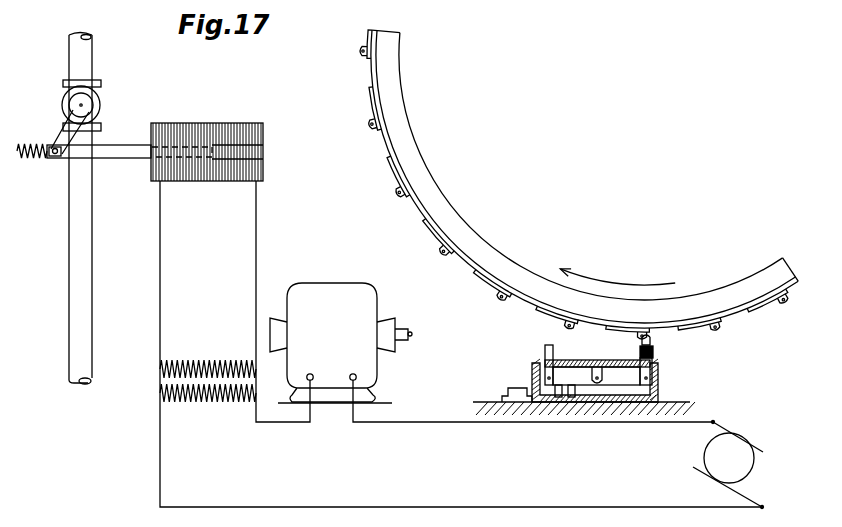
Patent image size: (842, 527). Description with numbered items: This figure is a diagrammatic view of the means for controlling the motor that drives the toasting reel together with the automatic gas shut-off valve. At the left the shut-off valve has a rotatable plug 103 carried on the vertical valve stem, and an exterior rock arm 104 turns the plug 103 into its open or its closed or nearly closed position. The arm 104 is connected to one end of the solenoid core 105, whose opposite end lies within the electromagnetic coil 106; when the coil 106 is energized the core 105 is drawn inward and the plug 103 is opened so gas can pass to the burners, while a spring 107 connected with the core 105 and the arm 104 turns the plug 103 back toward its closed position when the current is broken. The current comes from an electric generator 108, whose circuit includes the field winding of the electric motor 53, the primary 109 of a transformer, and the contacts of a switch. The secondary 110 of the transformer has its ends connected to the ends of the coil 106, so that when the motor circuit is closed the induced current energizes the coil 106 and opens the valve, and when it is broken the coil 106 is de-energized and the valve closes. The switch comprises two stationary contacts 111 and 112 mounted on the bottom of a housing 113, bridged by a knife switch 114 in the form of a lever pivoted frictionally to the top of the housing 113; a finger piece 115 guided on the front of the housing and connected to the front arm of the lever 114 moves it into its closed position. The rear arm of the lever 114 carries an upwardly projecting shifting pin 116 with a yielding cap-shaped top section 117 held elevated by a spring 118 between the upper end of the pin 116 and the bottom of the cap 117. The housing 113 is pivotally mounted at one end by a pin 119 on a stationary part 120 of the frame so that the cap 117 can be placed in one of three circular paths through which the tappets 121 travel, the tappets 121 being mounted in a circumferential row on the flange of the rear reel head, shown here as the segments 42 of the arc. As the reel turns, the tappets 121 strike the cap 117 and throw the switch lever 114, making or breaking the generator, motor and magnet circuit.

The rotatable plug 103 is at (94, 98).
The rock arm 104 is at (70, 118).
The solenoid core 105 is at (137, 160).
The electromagnetic coil 106 is at (233, 181).
The spring 107 is at (29, 162).
The electric generator 108 is at (740, 466).
The primary of transformer 109 is at (219, 400).
The secondary of transformer 110 is at (216, 368).
The electric motor 53 is at (341, 343).
The contact segments 42 is at (743, 312).
The tappet 121 is at (785, 304).
The stationary switch contact 111 is at (558, 404).
The stationary switch contact 112 is at (572, 404).
The housing 113 is at (660, 397).
The knife switch 114 is at (580, 378).
The finger piece 115 is at (545, 348).
The shifting pin 116 is at (652, 372).
The yielding top section 117 is at (652, 350).
The spring 118 is at (655, 355).
The pin 119 is at (513, 388).
The stationary part of frame 120 is at (492, 403).